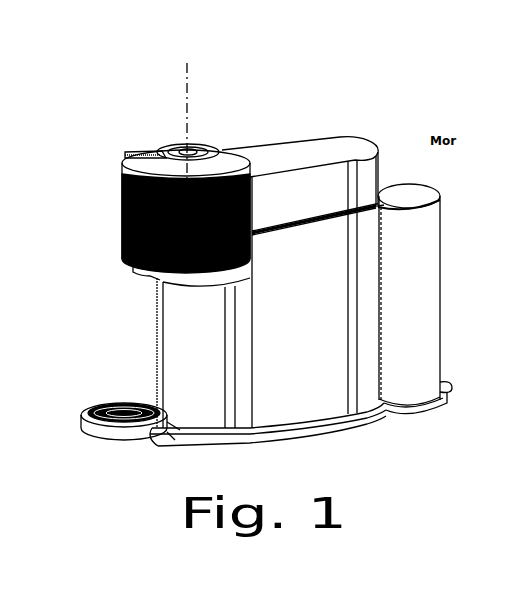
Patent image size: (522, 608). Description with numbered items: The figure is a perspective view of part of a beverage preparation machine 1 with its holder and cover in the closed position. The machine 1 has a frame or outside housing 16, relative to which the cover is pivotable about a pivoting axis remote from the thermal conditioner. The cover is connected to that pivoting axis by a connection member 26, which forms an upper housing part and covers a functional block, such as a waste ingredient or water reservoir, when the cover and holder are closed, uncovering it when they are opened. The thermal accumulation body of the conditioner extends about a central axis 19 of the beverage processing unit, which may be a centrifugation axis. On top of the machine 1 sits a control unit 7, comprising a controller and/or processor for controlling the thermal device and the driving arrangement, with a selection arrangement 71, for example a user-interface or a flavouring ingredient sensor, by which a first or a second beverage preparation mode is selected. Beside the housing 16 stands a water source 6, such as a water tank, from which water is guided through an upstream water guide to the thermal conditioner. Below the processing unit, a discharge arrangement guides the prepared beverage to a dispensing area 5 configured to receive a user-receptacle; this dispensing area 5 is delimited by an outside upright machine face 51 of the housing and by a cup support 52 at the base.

The machine 1 is at (122, 74).
The central axis 19 is at (192, 95).
The connection member 26 is at (300, 150).
The outside housing 16 is at (308, 383).
The water source 6 is at (422, 288).
The control unit 7 is at (176, 148).
The selection arrangement 71 is at (163, 162).
The outside upright machine face 51 is at (185, 332).
The dispensing area 5 is at (118, 352).
The cup support 52 is at (100, 408).